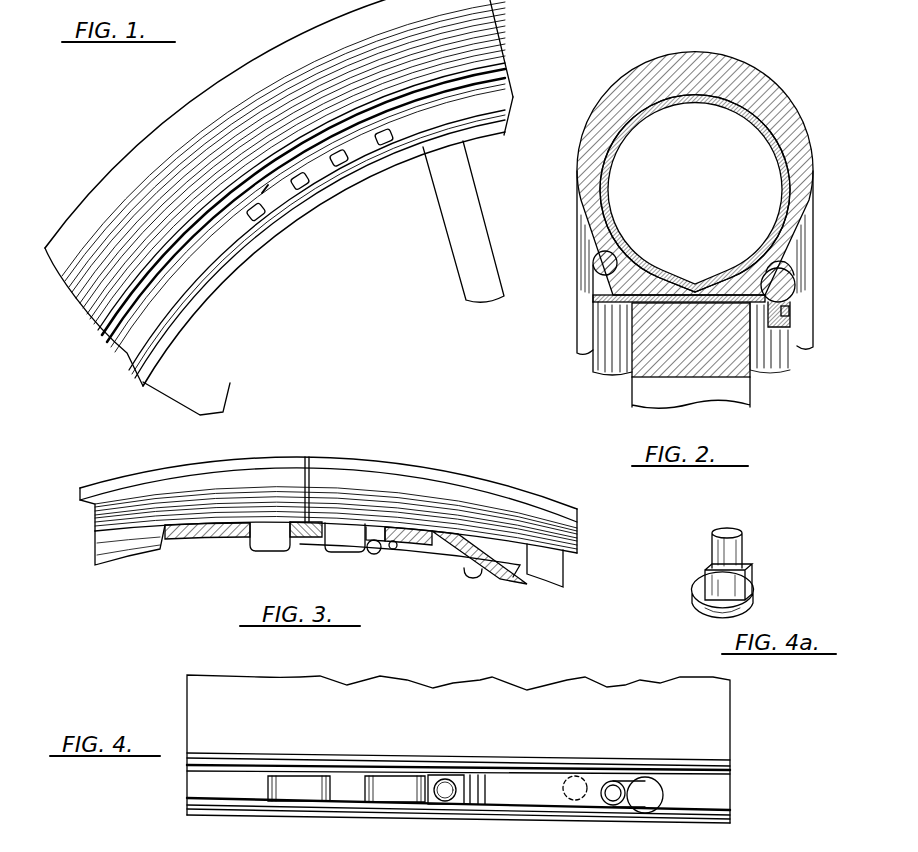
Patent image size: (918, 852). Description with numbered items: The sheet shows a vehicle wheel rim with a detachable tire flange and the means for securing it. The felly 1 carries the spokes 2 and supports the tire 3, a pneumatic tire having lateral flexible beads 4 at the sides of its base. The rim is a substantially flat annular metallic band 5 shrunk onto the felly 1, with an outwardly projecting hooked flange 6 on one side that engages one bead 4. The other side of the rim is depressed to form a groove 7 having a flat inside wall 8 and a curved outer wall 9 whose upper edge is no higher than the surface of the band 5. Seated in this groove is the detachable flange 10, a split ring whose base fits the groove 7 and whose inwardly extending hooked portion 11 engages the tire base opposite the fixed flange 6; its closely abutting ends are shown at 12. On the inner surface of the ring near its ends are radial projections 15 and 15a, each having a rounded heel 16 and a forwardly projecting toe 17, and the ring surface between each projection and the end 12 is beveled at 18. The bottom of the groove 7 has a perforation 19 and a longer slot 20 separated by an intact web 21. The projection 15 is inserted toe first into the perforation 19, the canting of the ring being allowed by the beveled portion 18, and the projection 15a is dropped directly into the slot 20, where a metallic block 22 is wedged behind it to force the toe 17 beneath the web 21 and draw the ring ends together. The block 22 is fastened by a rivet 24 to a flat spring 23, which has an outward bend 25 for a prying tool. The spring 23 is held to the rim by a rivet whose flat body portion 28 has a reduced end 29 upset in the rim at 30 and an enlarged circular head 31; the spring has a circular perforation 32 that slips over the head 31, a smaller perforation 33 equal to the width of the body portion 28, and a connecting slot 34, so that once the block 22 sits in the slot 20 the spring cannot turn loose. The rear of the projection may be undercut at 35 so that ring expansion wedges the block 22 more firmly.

In FIG. 1, the felly 1 is at (187, 310).
In FIG. 2, the felly 1 is at (633, 373).
In FIG. 1, the spokes 2 is at (465, 262).
In FIG. 1, the tire 3 is at (118, 185).
In FIG. 2, the tire 3 is at (760, 82).
In FIG. 2, the beads 4 is at (593, 292).
In FIG. 2, the band 5 is at (690, 292).
In FIG. 4, the band 5 is at (458, 749).
In FIG. 2, the hooked flange 6 is at (593, 263).
In FIG. 2, the groove 7 is at (788, 313).
In FIG. 2, the inside wall 8 is at (721, 334).
In FIG. 2, the outer wall 9 is at (793, 300).
In FIG. 1, the detachable flange 10 is at (407, 107).
In FIG. 2, the detachable flange 10 is at (797, 281).
In FIG. 3, the detachable flange 10 is at (328, 505).
In FIG. 2, the hooked portion 11 is at (790, 257).
In FIG. 1, the ends 12 is at (260, 195).
In FIG. 3, the ends 12 is at (310, 462).
In FIG. 4, the ends 12 is at (440, 826).
In FIG. 1, the radial projection 15 is at (253, 218).
In FIG. 3, the radial projection 15 is at (270, 548).
In FIG. 4, the radial projection 15 is at (288, 778).
In FIG. 1, the radial projection 15a is at (298, 195).
In FIG. 3, the radial projection 15a is at (343, 552).
In FIG. 4, the radial projection 15a is at (392, 790).
In FIG. 3, the rounded heels 16 is at (252, 547).
In FIG. 4, the rounded heels 16 is at (266, 787).
In FIG. 3, the toes 17 is at (303, 540).
In FIG. 4, the toes 17 is at (363, 778).
In FIG. 3, the beveled portion 18 is at (297, 520).
In FIG. 3, the perforation 19 is at (288, 522).
In FIG. 3, the slot 20 is at (330, 523).
In FIG. 3, the web 21 is at (312, 520).
In FIG. 3, the block 22 is at (393, 535).
In FIG. 1, the flat spring 23 is at (352, 160).
In FIG. 3, the flat spring 23 is at (440, 553).
In FIG. 4, the flat spring 23 is at (458, 802).
In FIG. 3, the rivet 24 is at (374, 554).
In FIG. 4, the rivet 24 is at (446, 783).
In FIG. 3, the outward bend 25 is at (393, 550).
In FIG. 4A, the body portion 28 is at (740, 580).
In FIG. 4A, the reduced end 29 is at (742, 545).
In FIG. 3, the upset end 30 is at (493, 536).
In FIG. 3, the circular head 31 is at (480, 577).
In FIG. 4, the circular head 31 is at (613, 806).
In FIG. 4A, the circular head 31 is at (752, 595).
In FIG. 4, the circular perforation 32 is at (648, 800).
In FIG. 4, the smaller perforation 33 is at (575, 788).
In FIG. 4, the slot 34 is at (630, 784).
In FIG. 3, the undercut 35 is at (362, 525).